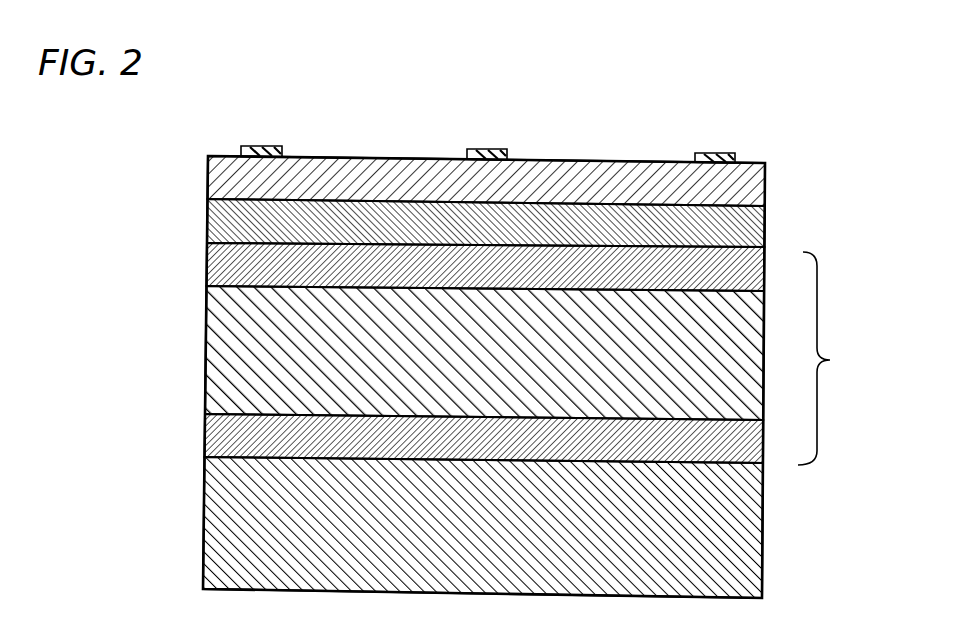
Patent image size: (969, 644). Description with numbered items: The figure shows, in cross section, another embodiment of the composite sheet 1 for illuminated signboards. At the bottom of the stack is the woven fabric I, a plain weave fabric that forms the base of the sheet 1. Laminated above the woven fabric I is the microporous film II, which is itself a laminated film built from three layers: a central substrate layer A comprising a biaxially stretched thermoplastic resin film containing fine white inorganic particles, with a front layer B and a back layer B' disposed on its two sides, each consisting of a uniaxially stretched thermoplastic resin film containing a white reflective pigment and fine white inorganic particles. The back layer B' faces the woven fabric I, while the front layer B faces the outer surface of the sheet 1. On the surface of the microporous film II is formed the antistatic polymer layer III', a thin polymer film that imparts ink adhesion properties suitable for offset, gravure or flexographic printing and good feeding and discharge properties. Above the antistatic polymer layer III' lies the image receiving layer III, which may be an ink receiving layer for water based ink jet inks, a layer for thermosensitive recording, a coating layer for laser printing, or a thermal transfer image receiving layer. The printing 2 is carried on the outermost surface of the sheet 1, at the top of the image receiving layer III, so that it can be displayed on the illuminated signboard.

The sheet for illuminated signboard 1 is at (609, 109).
The printing 2 is at (261, 146).
The substrate layer A is at (220, 352).
The front layer B is at (459, 267).
The back layer B' is at (457, 438).
The woven fabric I is at (745, 548).
The microporous film II is at (829, 358).
The image receiving layer III is at (539, 181).
The antistatic polymer layer III' is at (540, 223).